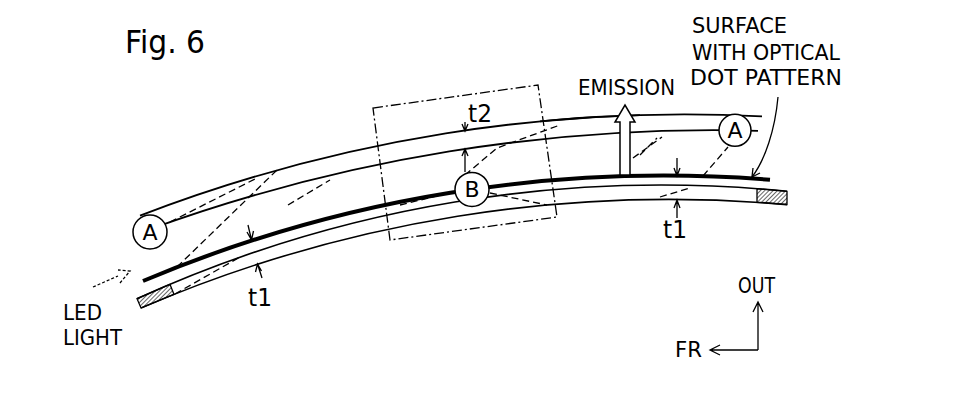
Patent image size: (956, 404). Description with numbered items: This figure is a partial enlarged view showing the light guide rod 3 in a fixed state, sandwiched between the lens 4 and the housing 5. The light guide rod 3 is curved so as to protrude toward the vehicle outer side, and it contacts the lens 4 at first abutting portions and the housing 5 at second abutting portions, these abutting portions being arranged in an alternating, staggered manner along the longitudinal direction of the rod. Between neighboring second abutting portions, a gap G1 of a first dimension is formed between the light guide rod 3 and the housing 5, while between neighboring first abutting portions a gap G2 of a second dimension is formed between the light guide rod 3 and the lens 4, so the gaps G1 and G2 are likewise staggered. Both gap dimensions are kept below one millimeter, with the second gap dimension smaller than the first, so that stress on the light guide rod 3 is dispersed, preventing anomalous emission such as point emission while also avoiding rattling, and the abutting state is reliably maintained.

The light guide rod 3 is at (362, 163).
The lens 4 is at (575, 121).
The housing 5 is at (300, 226).
The gap G1 is at (330, 237).
The gap G2 is at (423, 150).